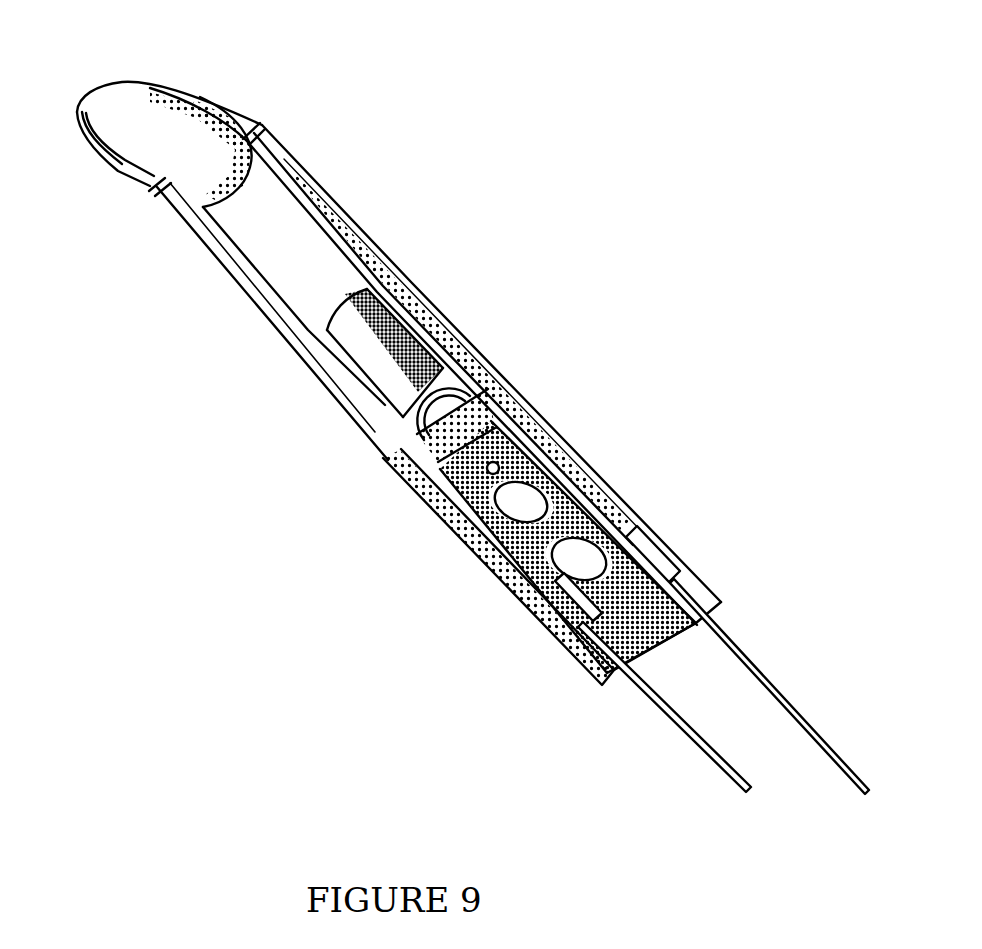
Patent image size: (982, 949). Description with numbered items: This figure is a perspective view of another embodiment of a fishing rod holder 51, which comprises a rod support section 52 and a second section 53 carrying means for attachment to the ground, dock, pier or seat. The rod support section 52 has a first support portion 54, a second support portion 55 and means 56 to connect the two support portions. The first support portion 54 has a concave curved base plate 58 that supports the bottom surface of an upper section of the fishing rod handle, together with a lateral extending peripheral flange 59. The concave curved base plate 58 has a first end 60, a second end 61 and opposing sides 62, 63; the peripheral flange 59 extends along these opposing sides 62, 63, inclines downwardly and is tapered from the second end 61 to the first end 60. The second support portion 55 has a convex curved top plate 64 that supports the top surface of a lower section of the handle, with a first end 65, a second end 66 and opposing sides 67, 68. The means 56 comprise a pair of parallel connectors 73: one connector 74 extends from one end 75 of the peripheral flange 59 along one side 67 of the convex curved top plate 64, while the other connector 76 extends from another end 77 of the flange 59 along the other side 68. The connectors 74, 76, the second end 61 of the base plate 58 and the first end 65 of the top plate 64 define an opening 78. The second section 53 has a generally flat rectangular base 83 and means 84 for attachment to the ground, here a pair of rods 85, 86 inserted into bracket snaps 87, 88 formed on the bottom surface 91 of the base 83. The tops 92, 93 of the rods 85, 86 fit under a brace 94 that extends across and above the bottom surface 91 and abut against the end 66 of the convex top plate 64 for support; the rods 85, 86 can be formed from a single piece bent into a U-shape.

The fishing rod holder 51 is at (593, 263).
The rod support section 52 is at (383, 187).
The second section 53 is at (662, 492).
The first support portion 54 is at (222, 82).
The second support portion 55 is at (443, 298).
The means to connect first and second support portions 56 is at (205, 296).
The concave curved base plate 58 is at (138, 100).
The lateral extending peripheral flange 59 is at (102, 152).
The first end 60 is at (101, 92).
The second end 61 is at (269, 225).
The opposing side 62 is at (122, 170).
The opposing side 63 is at (212, 110).
The convex curved top plate 64 is at (365, 362).
The first end 65 is at (332, 309).
The second end 66 is at (383, 457).
The opposing side 67 is at (367, 360).
The opposing side 68 is at (430, 335).
The parallel connectors 73 is at (395, 245).
The connector 74 is at (250, 290).
The end of peripheral flange 75 is at (160, 197).
The connector 76 is at (343, 227).
The end of peripheral flange 77 is at (260, 128).
The opening 78 is at (332, 185).
The base 83 is at (553, 517).
The means for attachment 84 is at (750, 613).
The rod 85 is at (675, 713).
The rod 86 is at (747, 667).
The bracket snap 87 is at (555, 612).
The bracket snap 88 is at (663, 550).
The bottom surface 91 is at (652, 630).
The top of rod 92 is at (385, 458).
The top of rod 93 is at (470, 388).
The brace 94 is at (483, 413).